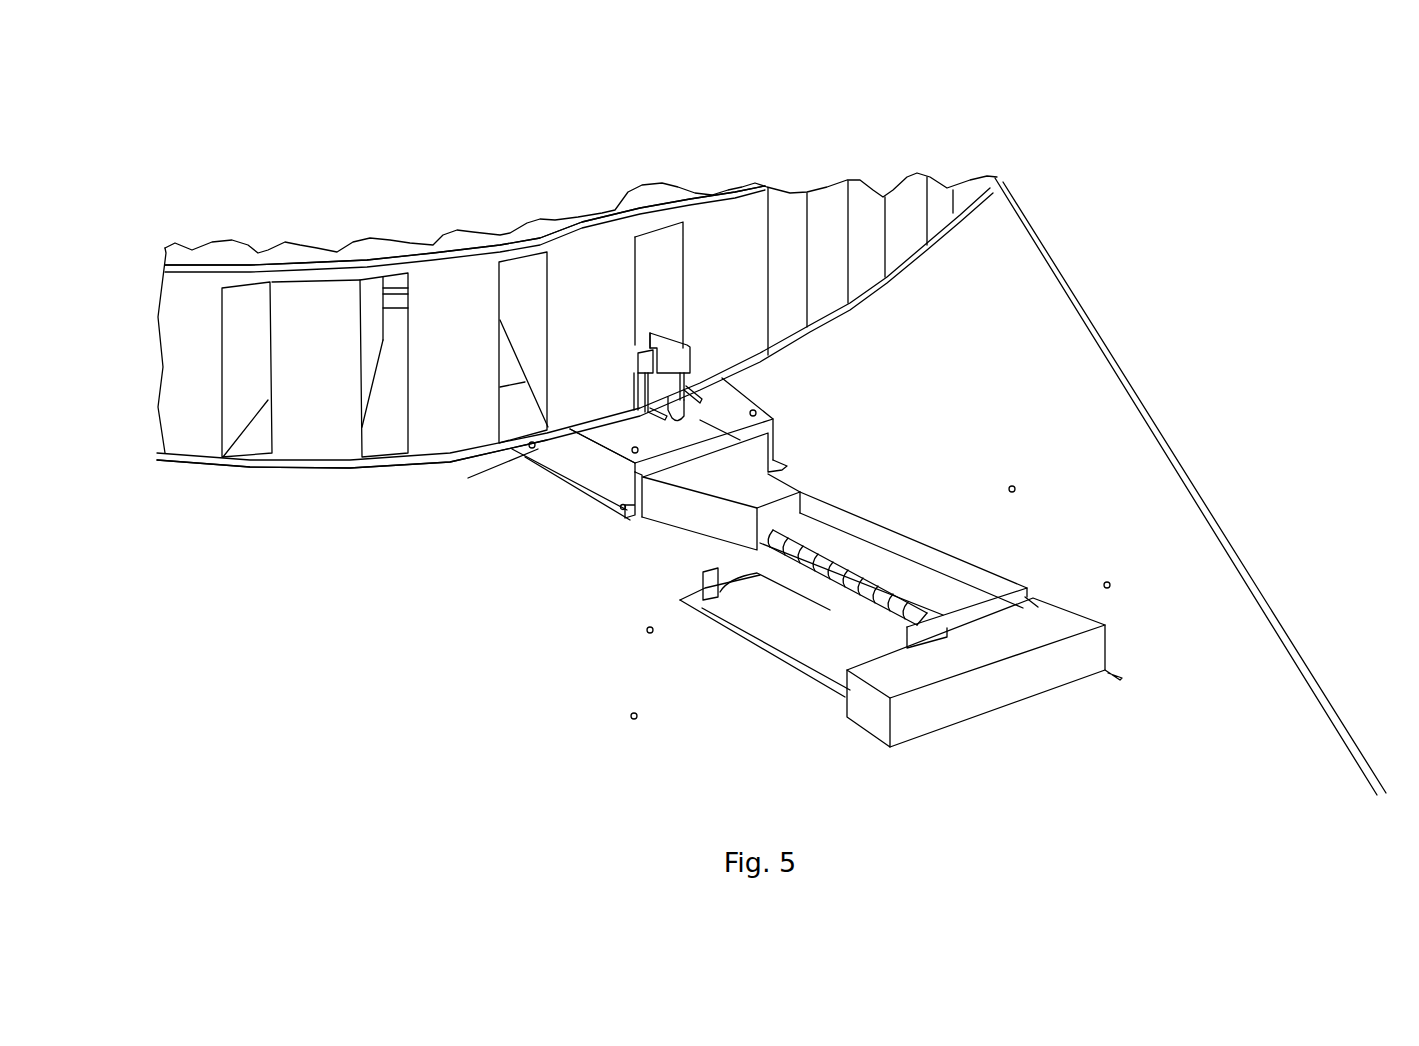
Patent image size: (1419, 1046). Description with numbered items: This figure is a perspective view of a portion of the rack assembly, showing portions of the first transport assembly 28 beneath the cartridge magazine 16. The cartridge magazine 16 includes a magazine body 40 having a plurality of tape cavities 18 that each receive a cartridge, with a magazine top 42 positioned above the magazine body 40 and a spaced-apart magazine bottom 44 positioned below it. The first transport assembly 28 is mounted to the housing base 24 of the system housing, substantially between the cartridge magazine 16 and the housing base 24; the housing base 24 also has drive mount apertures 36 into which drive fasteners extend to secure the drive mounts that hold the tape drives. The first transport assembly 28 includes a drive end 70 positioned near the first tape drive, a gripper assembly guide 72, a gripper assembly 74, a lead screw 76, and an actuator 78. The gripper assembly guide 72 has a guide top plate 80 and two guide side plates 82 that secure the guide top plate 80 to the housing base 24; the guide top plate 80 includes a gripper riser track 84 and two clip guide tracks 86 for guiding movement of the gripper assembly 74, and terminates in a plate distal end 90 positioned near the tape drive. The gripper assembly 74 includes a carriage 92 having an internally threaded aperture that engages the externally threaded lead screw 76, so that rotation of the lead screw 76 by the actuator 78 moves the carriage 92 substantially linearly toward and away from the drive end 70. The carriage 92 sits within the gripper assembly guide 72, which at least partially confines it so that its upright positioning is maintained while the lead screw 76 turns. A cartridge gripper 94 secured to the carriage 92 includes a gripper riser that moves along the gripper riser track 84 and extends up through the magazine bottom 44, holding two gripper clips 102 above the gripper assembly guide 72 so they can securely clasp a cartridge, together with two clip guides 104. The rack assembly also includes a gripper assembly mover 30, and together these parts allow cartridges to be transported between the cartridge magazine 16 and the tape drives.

The cartridge magazine 16 is at (310, 427).
The tape cavity 18 is at (390, 360).
The housing base 24 is at (985, 337).
The first transport assembly 28 is at (622, 530).
The gripper assembly mover 30 is at (1118, 640).
The drive mount aperture 36 is at (647, 633).
The magazine body 40 is at (437, 370).
The magazine top 42 is at (460, 252).
The magazine bottom 44 is at (370, 472).
The drive end 70 is at (773, 448).
The gripper assembly guide 72 is at (860, 535).
The gripper assembly 74 is at (885, 367).
The lead screw 76 is at (873, 590).
The actuator 78 is at (787, 638).
The guide top plate 80 is at (727, 396).
The guide side plate 82 is at (613, 475).
The gripper riser track 84 is at (773, 415).
The clip guide track 86 is at (705, 393).
The plate distal end 90 is at (640, 432).
The carriage 92 is at (777, 492).
The cartridge gripper 94 is at (674, 335).
The gripper clip 102 is at (667, 345).
The clip guide 104 is at (655, 400).